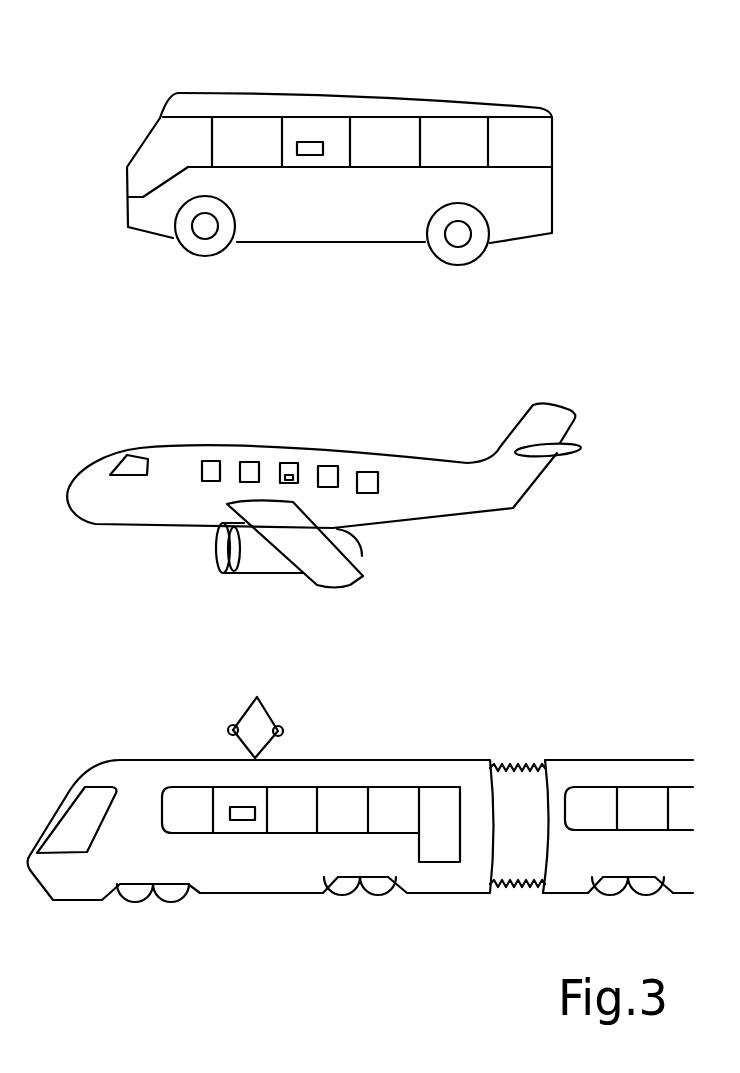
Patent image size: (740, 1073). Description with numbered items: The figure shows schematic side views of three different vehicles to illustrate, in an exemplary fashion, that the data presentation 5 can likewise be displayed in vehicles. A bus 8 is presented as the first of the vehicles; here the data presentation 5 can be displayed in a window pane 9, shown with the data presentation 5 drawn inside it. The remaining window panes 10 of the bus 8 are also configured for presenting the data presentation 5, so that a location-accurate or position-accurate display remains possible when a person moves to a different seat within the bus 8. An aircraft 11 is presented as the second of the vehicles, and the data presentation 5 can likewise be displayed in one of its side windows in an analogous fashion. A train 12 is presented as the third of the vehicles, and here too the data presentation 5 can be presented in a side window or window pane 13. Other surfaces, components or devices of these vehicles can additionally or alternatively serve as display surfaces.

The data presentation 5 is at (310, 155).
The bus 8 is at (537, 210).
The window pane 9 is at (327, 125).
The remaining window panes 10 is at (447, 127).
The aircraft 11 is at (493, 492).
The train 12 is at (420, 770).
The window pane 13 is at (230, 795).